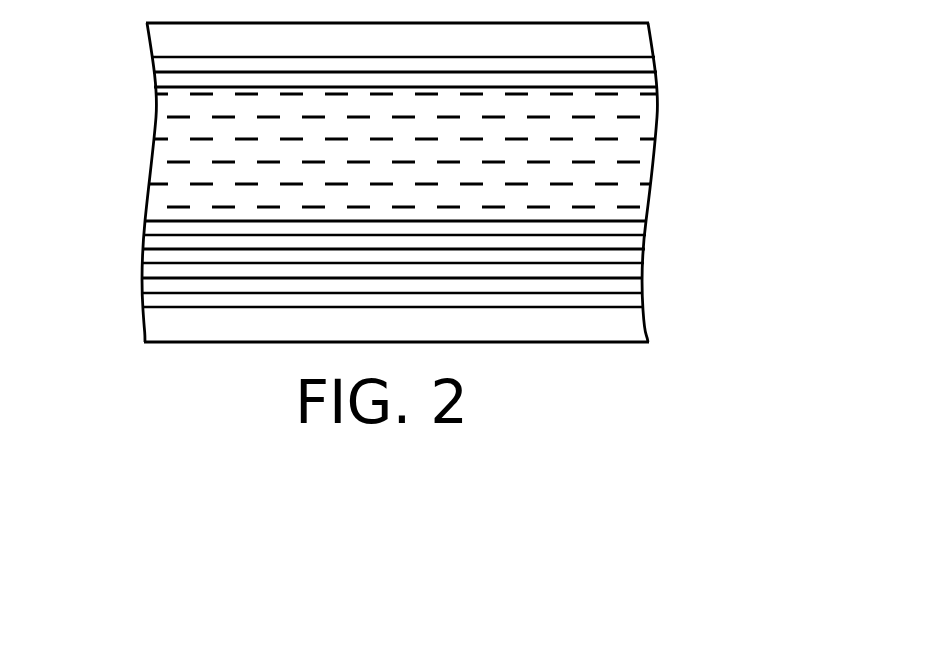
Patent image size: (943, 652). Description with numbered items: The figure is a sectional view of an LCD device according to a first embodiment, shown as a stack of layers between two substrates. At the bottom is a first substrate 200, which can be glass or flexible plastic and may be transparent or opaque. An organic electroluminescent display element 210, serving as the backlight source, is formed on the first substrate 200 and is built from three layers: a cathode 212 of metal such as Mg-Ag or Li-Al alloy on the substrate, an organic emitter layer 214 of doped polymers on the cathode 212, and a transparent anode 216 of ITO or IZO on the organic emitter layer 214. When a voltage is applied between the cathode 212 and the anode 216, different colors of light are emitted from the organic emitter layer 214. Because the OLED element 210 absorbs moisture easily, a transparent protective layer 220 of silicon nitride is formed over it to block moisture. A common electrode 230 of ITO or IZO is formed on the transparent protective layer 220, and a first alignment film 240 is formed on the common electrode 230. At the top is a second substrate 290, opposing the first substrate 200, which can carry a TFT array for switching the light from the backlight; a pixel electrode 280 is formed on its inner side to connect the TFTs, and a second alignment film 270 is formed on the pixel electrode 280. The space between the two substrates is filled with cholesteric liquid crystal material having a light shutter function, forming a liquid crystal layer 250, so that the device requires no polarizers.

The second substrate 290 is at (645, 39).
The pixel electrode 280 is at (647, 63).
The second alignment film 270 is at (168, 79).
The liquid crystal layer 250 is at (643, 167).
The first alignment film 240 is at (150, 228).
The common electrode 230 is at (152, 252).
The transparent protective layer 220 is at (152, 257).
The anode 216 is at (642, 270).
The organic emitter layer 214 is at (642, 285).
The cathode 212 is at (642, 302).
The organic electroluminescent display element 210 is at (482, 287).
The first substrate 200 is at (152, 325).